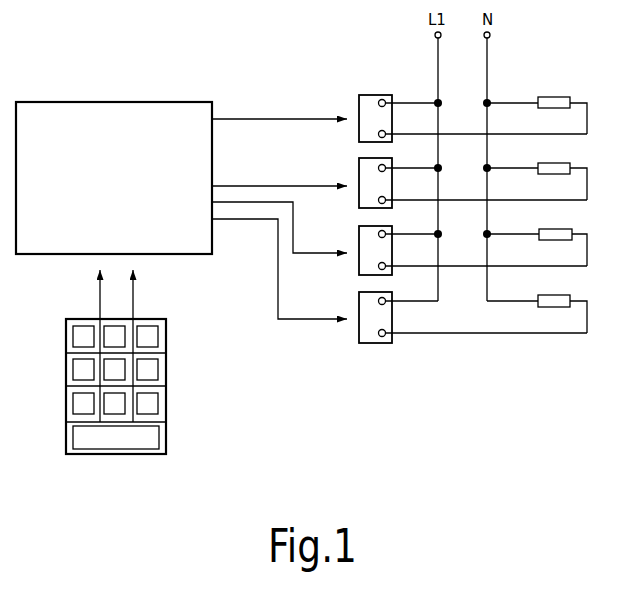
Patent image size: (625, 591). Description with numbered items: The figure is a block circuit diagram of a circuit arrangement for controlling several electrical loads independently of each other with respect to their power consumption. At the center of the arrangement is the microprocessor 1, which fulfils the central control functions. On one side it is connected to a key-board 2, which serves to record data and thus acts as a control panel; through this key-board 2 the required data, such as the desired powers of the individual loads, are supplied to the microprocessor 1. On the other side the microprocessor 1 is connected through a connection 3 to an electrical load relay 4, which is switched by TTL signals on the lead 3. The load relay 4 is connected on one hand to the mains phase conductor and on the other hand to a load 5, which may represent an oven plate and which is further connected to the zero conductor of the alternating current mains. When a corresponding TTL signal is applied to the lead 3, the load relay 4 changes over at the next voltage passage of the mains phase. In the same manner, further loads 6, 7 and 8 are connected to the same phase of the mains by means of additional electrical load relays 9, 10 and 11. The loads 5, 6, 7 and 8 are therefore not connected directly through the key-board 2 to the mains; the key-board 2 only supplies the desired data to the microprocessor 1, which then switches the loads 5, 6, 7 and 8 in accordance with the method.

The microprocessor 1 is at (162, 108).
The key-board 2 is at (167, 373).
The connection 3 is at (282, 119).
The load relay 4 is at (372, 99).
The load 5 is at (562, 97).
The load 6 is at (563, 166).
The load 7 is at (562, 235).
The load 8 is at (561, 300).
The load relay 9 is at (359, 170).
The load relay 10 is at (360, 241).
The load relay 11 is at (360, 300).